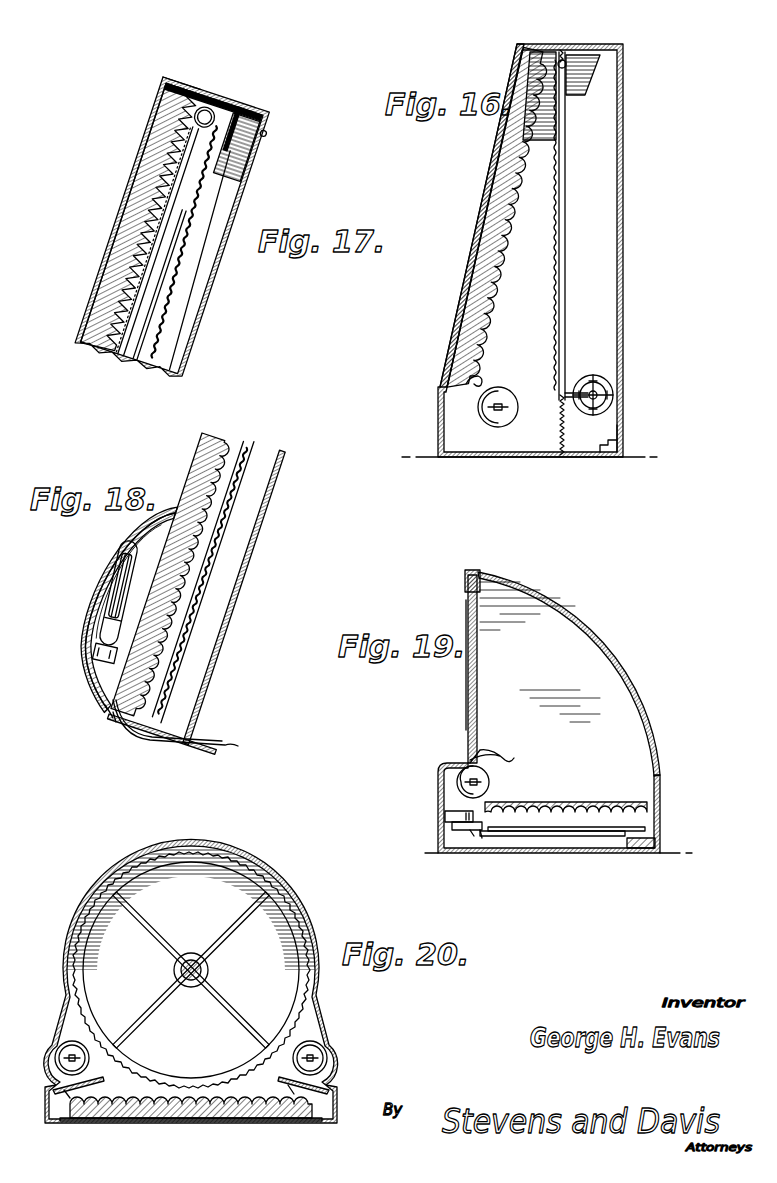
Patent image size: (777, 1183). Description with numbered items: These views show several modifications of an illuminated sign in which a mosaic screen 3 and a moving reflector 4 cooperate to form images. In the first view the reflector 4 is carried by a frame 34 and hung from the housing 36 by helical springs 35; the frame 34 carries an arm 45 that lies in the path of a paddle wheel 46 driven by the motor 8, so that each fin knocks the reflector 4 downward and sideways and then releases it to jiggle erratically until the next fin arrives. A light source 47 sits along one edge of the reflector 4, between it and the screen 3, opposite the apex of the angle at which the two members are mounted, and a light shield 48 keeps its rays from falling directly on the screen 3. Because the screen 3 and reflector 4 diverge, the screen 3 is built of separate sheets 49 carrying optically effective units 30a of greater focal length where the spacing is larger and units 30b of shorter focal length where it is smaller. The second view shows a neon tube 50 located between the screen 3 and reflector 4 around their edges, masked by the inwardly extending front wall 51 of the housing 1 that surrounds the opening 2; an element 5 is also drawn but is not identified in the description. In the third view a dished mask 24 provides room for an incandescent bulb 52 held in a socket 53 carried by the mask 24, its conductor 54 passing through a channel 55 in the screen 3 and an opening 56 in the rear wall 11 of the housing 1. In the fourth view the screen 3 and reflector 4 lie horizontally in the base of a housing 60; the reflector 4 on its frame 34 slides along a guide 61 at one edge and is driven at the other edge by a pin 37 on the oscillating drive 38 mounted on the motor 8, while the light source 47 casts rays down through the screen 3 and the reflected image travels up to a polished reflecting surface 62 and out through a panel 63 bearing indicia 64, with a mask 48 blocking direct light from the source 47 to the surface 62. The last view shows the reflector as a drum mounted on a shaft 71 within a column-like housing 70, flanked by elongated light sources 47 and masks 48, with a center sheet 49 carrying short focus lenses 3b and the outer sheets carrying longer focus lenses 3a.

In FIG. 17, the housing 1 is at (186, 86).
In FIG. 18, the housing 1 is at (152, 748).
In FIG. 17, the opening 2 is at (150, 156).
In FIG. 18, the opening 2 is at (200, 440).
In FIG. 16, the screen 3 is at (476, 197).
In FIG. 17, the screen 3 is at (142, 181).
In FIG. 18, the screen 3 is at (195, 476).
In FIG. 19, the screen 3 is at (652, 805).
In FIG. 20, the screen 3 is at (180, 1121).
In FIG. 20, the longer focus lenses 3a is at (110, 1104).
In FIG. 20, the short focus lenses 3b is at (178, 1104).
In FIG. 16, the reflector 4 is at (556, 272).
In FIG. 17, the reflector 4 is at (168, 329).
In FIG. 18, the reflector 4 is at (238, 442).
In FIG. 19, the reflector 4 is at (648, 829).
In FIG. 17, the reflector plate 5 is at (217, 181).
In FIG. 18, the reflector plate 5 is at (256, 456).
In FIG. 16, the motor 8 is at (616, 418).
In FIG. 19, the motor 8 is at (445, 812).
In FIG. 17, the rear wall 11 is at (268, 158).
In FIG. 18, the rear wall 11 is at (233, 621).
In FIG. 18, the mask 24 is at (93, 601).
In FIG. 16, the optically effective units of greater focal length 30a is at (478, 332).
In FIG. 16, the optically effective units of shorter focal length 30b is at (502, 180).
In FIG. 16, the frame 34 is at (566, 218).
In FIG. 19, the frame 34 is at (553, 837).
In FIG. 16, the helical springs 35 is at (564, 48).
In FIG. 16, the housing 36 is at (598, 45).
In FIG. 19, the pin 37 is at (483, 838).
In FIG. 19, the oscillating drive 38 is at (472, 836).
In FIG. 16, the arm 45 is at (575, 400).
In FIG. 16, the paddle wheel 46 is at (612, 386).
In FIG. 16, the light source 47 is at (495, 430).
In FIG. 19, the light source 47 is at (460, 766).
In FIG. 20, the light source 47 is at (64, 1043).
In FIG. 16, the light shield 48 is at (486, 379).
In FIG. 19, the light shield 48 is at (505, 757).
In FIG. 20, the light shield 48 is at (331, 1092).
In FIG. 16, the sheet 49 is at (510, 122).
In FIG. 20, the sheet 49 is at (214, 1118).
In FIG. 17, the neon tube 50 is at (222, 95).
In FIG. 17, the front wall 51 is at (166, 98).
In FIG. 18, the incandescent bulb 52 is at (126, 560).
In FIG. 18, the socket 53 is at (100, 660).
In FIG. 18, the conductor 54 is at (114, 722).
In FIG. 18, the channel 55 is at (108, 713).
In FIG. 18, the opening 56 is at (200, 738).
In FIG. 19, the housing 60 is at (437, 846).
In FIG. 19, the guide 61 is at (636, 848).
In FIG. 19, the reflecting surface 62 is at (615, 675).
In FIG. 19, the panel 63 is at (466, 588).
In FIG. 19, the indicia 64 is at (467, 696).
In FIG. 20, the column-like housing 70 is at (98, 886).
In FIG. 20, the shaft 71 is at (210, 966).